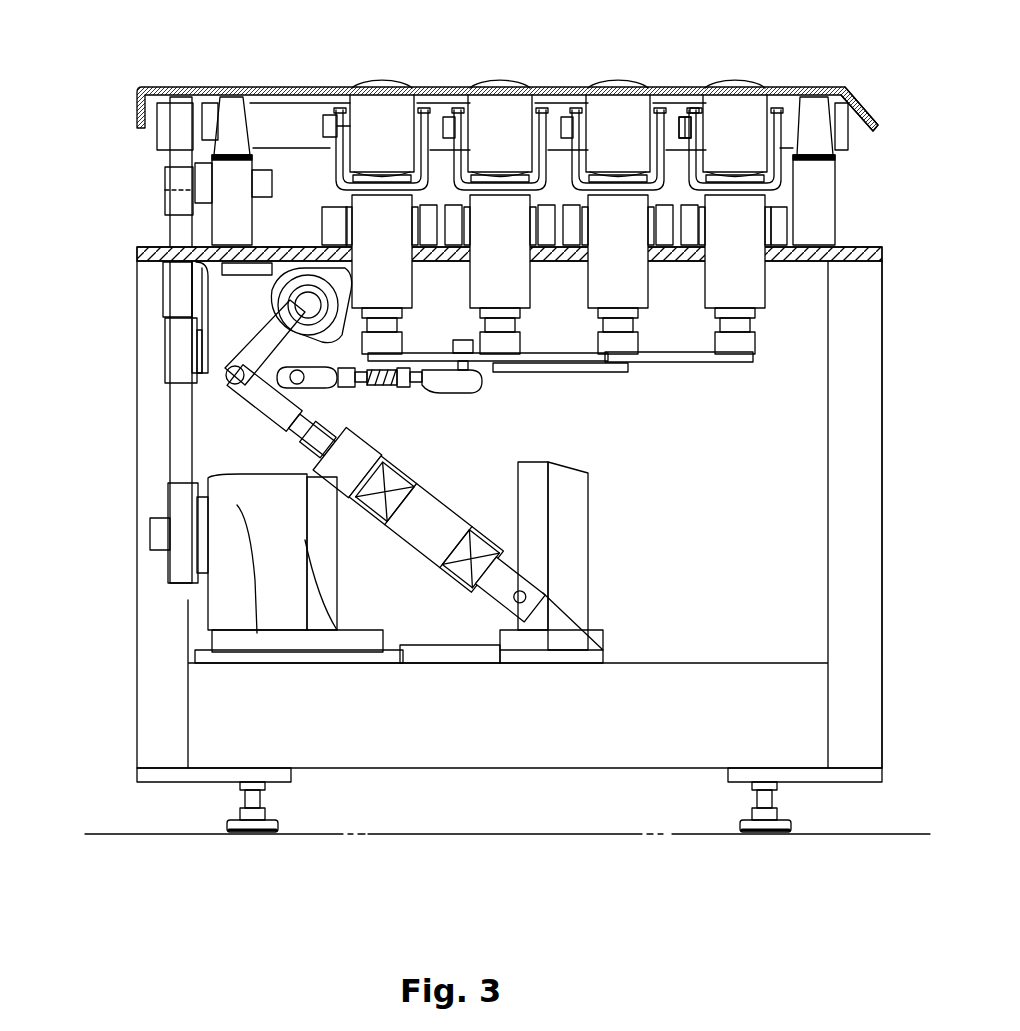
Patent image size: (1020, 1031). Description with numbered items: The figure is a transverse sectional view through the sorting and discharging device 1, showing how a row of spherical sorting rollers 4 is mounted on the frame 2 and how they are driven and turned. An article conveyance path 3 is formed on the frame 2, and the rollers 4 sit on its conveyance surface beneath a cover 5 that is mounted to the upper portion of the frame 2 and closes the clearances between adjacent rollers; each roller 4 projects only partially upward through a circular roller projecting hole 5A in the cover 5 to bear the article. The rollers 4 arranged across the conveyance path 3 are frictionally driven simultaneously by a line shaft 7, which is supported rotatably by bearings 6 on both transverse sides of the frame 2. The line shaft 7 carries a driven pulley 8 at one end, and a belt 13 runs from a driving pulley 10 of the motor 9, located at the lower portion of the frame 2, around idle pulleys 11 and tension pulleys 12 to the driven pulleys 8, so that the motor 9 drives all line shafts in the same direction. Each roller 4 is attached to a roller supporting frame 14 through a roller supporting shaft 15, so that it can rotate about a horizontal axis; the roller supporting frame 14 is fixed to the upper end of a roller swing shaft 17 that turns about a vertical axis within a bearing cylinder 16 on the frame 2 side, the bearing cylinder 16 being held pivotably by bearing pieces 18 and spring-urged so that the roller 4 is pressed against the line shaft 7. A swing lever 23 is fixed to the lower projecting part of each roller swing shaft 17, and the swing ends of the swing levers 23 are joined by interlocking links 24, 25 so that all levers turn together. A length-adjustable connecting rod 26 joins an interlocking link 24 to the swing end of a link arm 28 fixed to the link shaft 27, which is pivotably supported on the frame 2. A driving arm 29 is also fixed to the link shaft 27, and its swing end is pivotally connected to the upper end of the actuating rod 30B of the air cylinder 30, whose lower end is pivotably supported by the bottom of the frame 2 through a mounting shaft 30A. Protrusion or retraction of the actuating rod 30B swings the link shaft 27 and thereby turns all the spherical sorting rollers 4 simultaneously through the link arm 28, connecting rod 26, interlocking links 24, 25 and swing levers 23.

The sorting and discharging device 1 is at (895, 322).
The frame 2 is at (870, 373).
The article conveyance path 3 is at (453, 62).
The spherical sorting roller 4 is at (735, 91).
The cover 5 is at (836, 94).
The roller projecting hole 5A is at (758, 108).
The bearing 6 is at (230, 98).
The line shaft 7 is at (290, 108).
The driven pulley 8 is at (182, 105).
The motor 9 is at (588, 516).
The driving pulley 10 is at (165, 502).
The idle pulley 11 is at (172, 203).
The tension pulley 12 is at (180, 380).
The belt 13 is at (170, 438).
The roller supporting frame 14 is at (791, 159).
The roller supporting shaft 15 is at (681, 118).
The bearing cylinder 16 is at (762, 255).
The roller swing shaft 17 is at (766, 338).
The bearing piece 18 is at (682, 236).
The swing lever 23 is at (759, 373).
The interlocking link 24 is at (433, 352).
The interlocking link 25 is at (565, 373).
The connecting rod 26 is at (383, 383).
The link shaft 27 is at (307, 292).
The link arm 28 is at (275, 362).
The driving arm 29 is at (205, 325).
The air cylinder 30 is at (445, 493).
The mounting shaft 30A is at (530, 598).
The actuating rod 30B is at (312, 432).